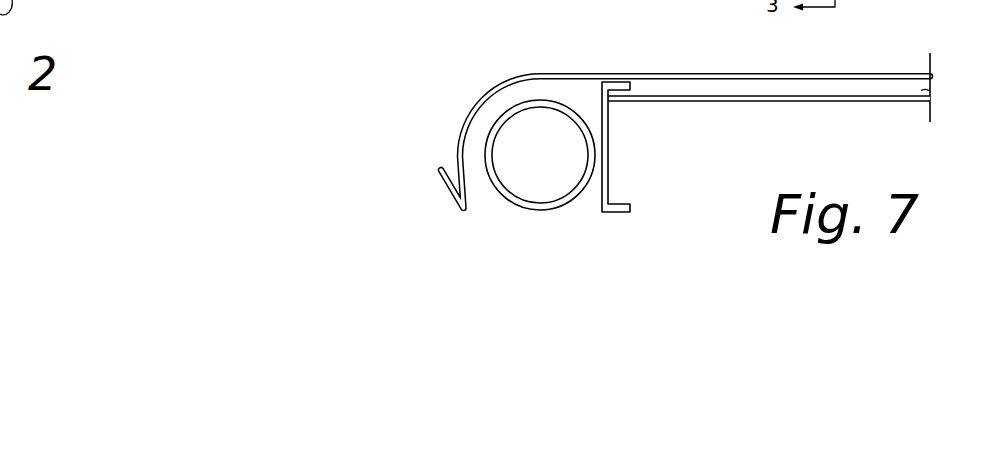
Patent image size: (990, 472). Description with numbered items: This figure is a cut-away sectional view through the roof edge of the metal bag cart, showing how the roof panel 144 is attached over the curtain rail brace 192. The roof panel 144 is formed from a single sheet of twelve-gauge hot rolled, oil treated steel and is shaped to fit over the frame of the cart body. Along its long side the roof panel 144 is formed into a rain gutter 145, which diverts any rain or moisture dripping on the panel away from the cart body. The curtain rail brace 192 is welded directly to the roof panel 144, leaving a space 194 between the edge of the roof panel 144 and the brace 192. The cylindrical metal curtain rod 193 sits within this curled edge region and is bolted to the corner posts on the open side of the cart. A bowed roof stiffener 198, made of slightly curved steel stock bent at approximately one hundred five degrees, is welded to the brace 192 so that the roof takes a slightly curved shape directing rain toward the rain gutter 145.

The roof panel 144 is at (836, 65).
The rain gutter 145 is at (433, 183).
The curtain rail brace 192 is at (620, 153).
The cylindrical metal curtain rod 193 is at (526, 215).
The space 194 is at (565, 98).
The bowed roof stiffener 198 is at (868, 109).